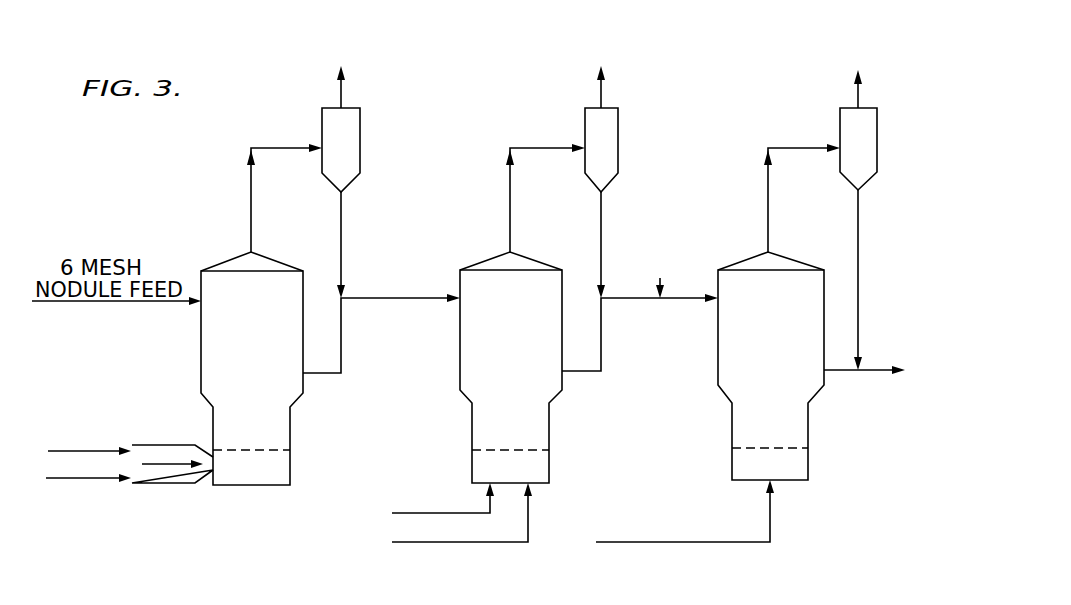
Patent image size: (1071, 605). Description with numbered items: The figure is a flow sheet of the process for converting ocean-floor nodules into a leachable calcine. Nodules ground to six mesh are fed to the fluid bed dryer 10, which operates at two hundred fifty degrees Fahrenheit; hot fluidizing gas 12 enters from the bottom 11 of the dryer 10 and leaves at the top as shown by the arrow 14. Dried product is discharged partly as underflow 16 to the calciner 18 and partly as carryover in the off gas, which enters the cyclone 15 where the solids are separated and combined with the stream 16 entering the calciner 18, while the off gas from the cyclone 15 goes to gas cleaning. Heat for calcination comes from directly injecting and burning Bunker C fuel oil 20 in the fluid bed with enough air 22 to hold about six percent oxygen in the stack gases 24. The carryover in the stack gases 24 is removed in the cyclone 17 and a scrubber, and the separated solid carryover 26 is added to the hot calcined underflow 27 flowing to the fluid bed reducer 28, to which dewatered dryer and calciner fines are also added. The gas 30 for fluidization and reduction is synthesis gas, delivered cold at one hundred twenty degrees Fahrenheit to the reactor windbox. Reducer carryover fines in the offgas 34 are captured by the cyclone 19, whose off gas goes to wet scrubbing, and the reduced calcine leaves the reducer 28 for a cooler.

The fluid bed dryer 10 is at (188, 360).
The bottom of dryer 11 is at (173, 445).
The hot fluidizing gas 12 is at (164, 466).
The dryer off gas arrow 14 is at (251, 200).
The cyclone 15 is at (360, 135).
The underflow 16 is at (331, 375).
The cyclone 17 is at (620, 133).
The calciner 18 is at (460, 352).
The cyclone 19 is at (878, 133).
The Bunker C fuel oil 20 is at (400, 513).
The air 22 is at (398, 542).
The stack gases 24 is at (508, 201).
The separated solid carryover 26 is at (599, 218).
The hot calcined underflow 27 is at (602, 338).
The fluid bed reducer 28 is at (823, 325).
The gas 30 is at (636, 543).
The offgas 34 is at (770, 213).